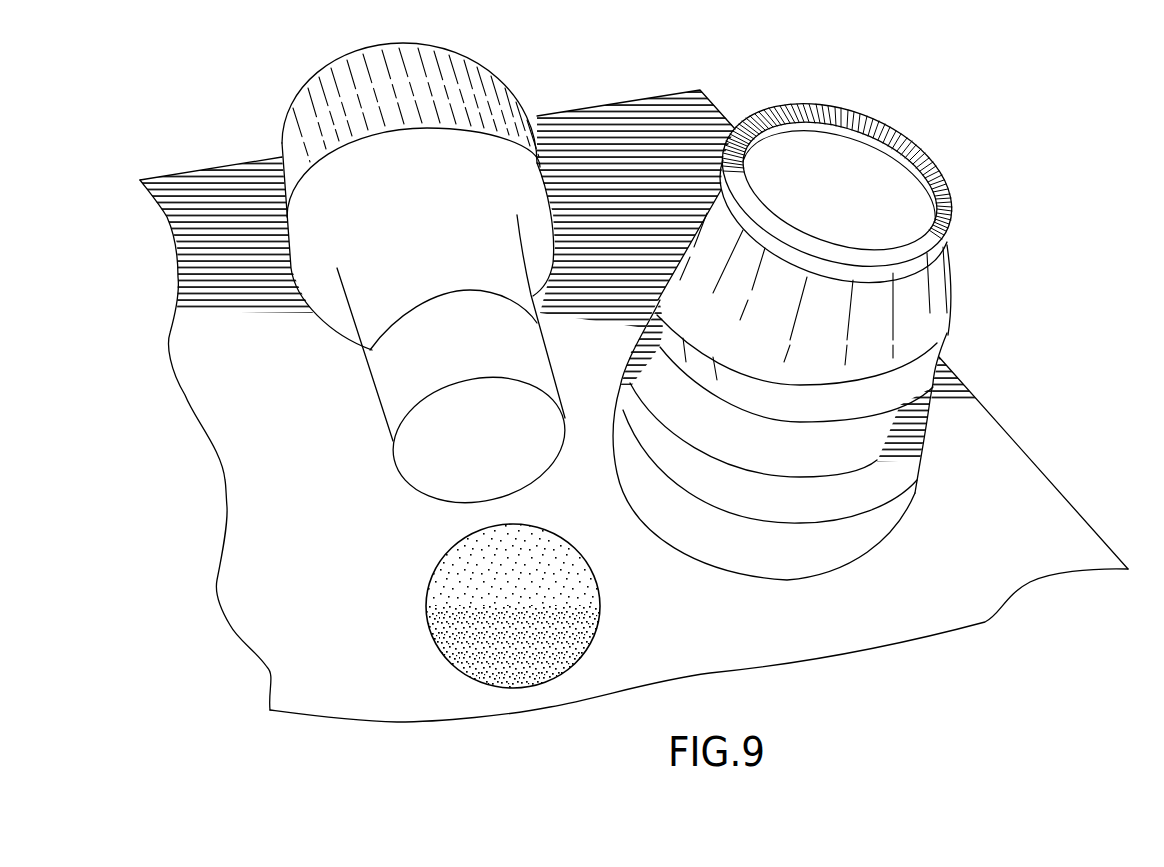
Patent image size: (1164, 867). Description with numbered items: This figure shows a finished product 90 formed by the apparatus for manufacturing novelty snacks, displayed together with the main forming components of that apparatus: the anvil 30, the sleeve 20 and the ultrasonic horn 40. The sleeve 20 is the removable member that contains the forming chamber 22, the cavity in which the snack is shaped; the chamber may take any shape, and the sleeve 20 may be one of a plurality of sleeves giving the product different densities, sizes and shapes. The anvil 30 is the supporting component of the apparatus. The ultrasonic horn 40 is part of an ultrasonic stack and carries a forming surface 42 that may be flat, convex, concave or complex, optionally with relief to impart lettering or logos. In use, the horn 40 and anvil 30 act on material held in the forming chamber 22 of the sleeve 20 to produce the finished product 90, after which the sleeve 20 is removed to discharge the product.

The sleeve 20 is at (854, 229).
The forming chamber 22 is at (880, 174).
The anvil 30 is at (830, 437).
The ultrasonic horn 40 is at (372, 272).
The forming surface 42 is at (423, 497).
The finished product 90 is at (600, 618).